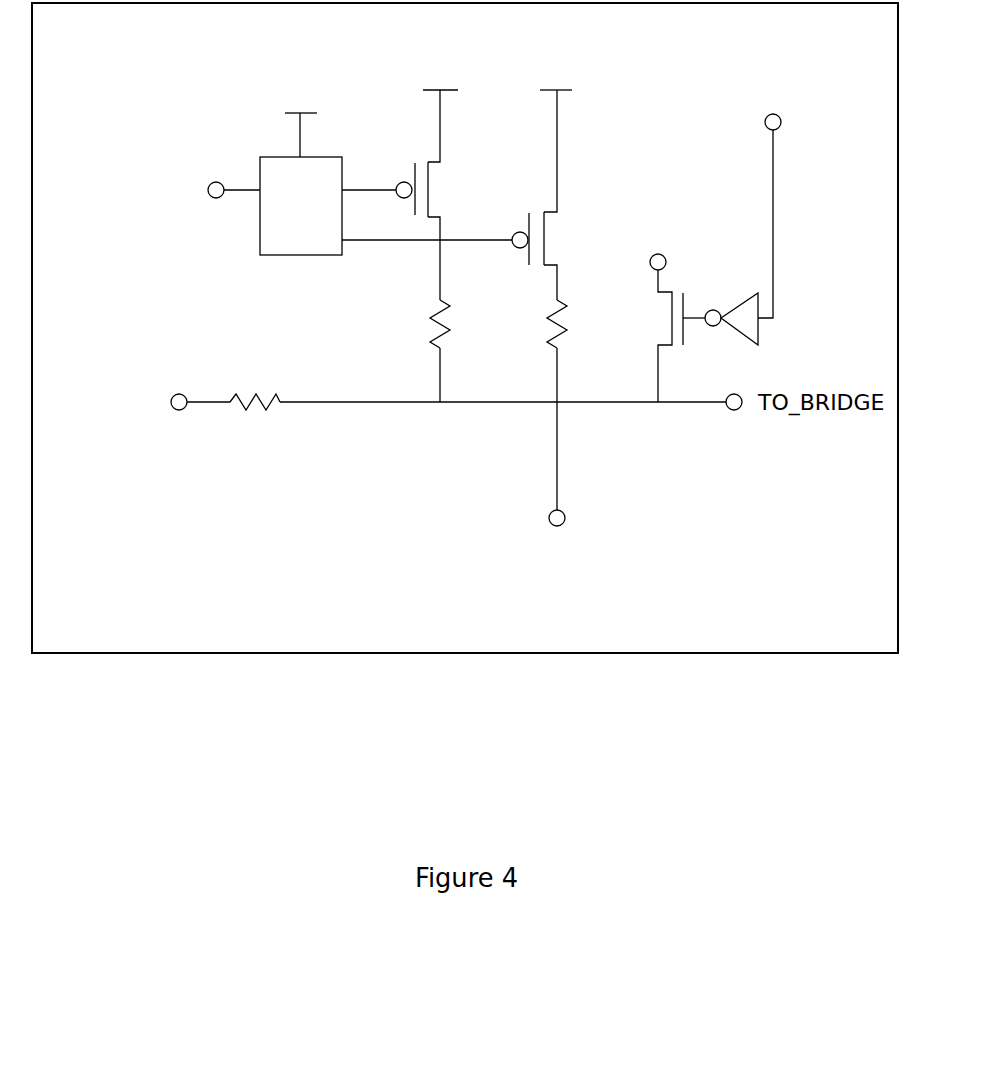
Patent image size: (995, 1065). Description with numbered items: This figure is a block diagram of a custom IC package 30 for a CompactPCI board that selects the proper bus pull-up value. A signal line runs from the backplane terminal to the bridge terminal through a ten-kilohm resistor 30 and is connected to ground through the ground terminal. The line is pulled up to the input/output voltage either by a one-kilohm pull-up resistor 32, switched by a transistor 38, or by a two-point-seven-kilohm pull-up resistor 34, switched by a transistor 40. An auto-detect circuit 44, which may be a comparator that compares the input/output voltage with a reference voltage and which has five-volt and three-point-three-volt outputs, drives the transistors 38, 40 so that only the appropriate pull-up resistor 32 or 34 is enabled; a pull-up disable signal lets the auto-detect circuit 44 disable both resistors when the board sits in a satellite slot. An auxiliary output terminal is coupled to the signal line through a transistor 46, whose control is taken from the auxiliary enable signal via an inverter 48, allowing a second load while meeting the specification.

The custom IC package 30 is at (294, 420).
The 1.0K ohm pull-up resistor 32 is at (460, 288).
The 2.7K ohm pull-up resistor 34 is at (576, 289).
The transistor 38 is at (395, 158).
The transistor 40 is at (509, 207).
The auto-detect circuit 44 is at (278, 274).
The transistor 46 is at (682, 355).
The inverter 48 is at (781, 338).